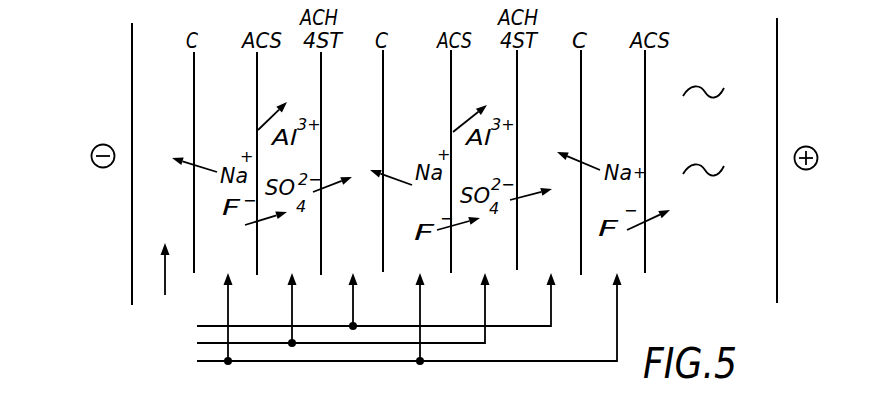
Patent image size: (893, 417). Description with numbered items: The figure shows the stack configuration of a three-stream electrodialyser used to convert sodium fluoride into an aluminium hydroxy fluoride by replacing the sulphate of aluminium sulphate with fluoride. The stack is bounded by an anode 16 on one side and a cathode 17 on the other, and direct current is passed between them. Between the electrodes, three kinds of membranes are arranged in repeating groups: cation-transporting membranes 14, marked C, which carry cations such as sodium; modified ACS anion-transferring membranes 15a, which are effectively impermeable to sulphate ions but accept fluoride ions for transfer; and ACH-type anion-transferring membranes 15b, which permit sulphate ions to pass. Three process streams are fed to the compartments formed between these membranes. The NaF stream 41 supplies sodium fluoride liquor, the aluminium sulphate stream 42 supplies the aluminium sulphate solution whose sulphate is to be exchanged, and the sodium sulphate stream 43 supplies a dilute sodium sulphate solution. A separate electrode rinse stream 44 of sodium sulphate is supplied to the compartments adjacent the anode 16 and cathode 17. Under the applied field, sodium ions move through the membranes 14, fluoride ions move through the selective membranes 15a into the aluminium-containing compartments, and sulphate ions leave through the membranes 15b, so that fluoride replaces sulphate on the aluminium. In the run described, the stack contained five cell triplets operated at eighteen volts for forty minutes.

The cation-transporting membrane 14 is at (194, 77).
The modified ACS anion-transferring membrane 15a is at (257, 78).
The ACH 45 T anion-transferring membrane 15b is at (321, 77).
The anode 16 is at (778, 105).
The cathode 17 is at (132, 118).
The NaF stream 41 is at (197, 362).
The aluminium sulphate stream 42 is at (196, 346).
The sodium sulphate stream 43 is at (196, 328).
The electrode rinse stream 44 is at (157, 284).